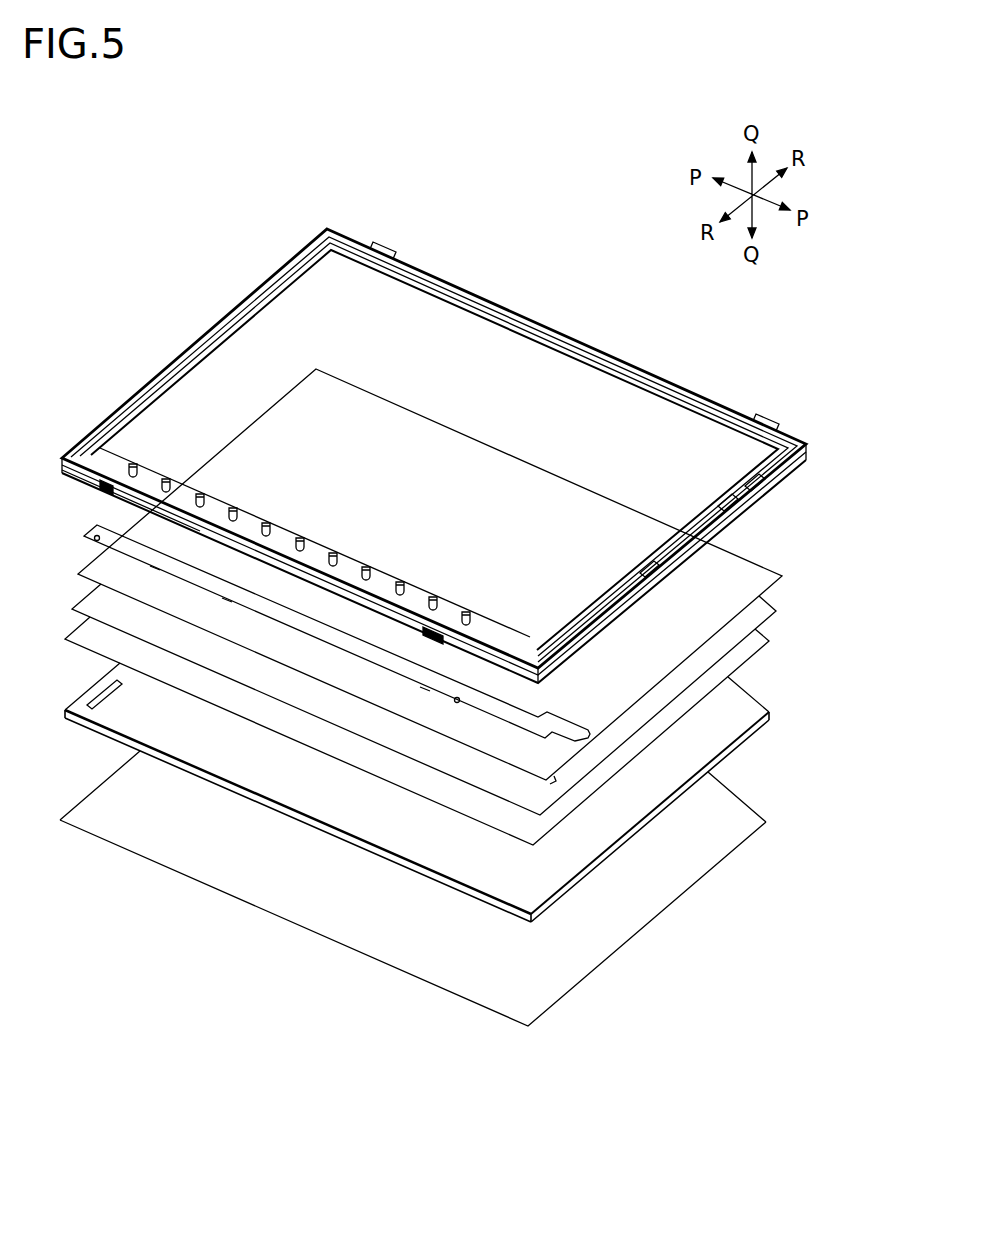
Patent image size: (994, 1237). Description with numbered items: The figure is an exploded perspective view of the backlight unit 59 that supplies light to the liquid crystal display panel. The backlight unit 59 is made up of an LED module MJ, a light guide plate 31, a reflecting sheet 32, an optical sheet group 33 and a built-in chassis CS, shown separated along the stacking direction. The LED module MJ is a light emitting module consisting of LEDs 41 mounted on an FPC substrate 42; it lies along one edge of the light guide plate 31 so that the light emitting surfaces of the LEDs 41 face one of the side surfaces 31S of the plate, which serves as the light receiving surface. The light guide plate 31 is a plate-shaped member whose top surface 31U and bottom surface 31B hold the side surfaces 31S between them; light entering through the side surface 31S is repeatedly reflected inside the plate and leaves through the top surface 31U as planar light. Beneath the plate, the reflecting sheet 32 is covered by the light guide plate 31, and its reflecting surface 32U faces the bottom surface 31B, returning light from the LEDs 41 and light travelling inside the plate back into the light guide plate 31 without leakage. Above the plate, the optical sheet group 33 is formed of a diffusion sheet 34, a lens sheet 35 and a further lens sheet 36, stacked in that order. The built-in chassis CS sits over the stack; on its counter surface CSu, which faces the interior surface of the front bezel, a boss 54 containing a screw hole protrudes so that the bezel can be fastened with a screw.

The backlight unit 59 is at (560, 213).
The built-in chassis CS is at (60, 456).
The counter surface CSu is at (150, 500).
The boss 54 is at (133, 462).
The LED module MJ is at (85, 530).
The LEDs 41 is at (78, 572).
The FPC substrate 42 is at (96, 539).
The optical sheet group 33 is at (780, 568).
The lens sheet 36 is at (430, 576).
The lens sheet 35 is at (424, 699).
The diffusion sheet 34 is at (417, 731).
The light guide plate 31 is at (80, 733).
The side surfaces 31S is at (117, 668).
The bottom surface 31B is at (745, 748).
The top surface 31U is at (417, 775).
The reflecting sheet 32 is at (52, 762).
The reflecting surface 32U is at (413, 878).